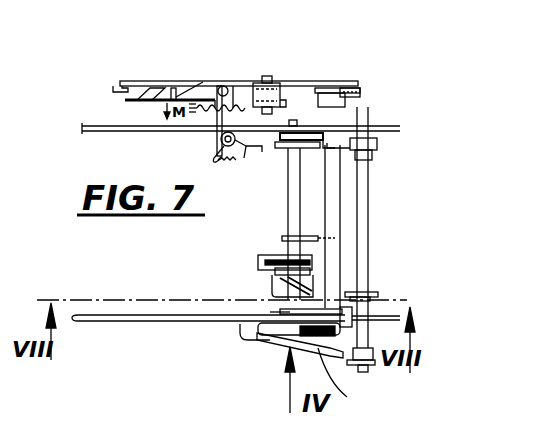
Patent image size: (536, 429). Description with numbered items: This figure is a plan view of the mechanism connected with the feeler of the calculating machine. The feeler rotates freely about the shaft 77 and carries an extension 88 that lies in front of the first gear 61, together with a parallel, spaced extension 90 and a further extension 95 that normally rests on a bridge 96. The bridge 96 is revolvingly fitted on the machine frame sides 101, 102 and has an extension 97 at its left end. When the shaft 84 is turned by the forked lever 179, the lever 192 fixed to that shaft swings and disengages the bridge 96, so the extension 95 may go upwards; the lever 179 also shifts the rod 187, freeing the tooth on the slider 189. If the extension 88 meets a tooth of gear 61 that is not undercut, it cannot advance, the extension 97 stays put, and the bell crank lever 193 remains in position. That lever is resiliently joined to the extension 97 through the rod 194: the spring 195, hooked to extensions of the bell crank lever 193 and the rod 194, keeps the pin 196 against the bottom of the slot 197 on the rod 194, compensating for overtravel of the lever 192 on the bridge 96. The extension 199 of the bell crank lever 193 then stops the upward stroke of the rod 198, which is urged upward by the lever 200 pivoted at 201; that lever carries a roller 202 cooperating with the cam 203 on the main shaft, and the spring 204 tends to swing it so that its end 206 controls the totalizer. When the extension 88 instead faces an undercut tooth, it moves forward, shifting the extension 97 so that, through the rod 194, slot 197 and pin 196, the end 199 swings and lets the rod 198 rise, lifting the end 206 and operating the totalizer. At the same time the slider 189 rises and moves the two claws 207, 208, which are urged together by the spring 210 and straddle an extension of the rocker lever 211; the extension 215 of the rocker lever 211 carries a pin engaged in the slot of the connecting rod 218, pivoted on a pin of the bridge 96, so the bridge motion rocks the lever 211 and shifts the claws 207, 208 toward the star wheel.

The first gear 61 is at (252, 256).
The shaft 77 is at (289, 213).
The shaft 84 is at (369, 184).
The extension 88 is at (290, 266).
The extension 90 is at (302, 288).
The extension 95 is at (336, 237).
The bridge 96 is at (327, 212).
The extension 97 is at (323, 134).
The machine frame side 101 is at (112, 322).
The machine frame side 102 is at (90, 131).
The lever 179 is at (350, 367).
The rod 187 is at (278, 343).
The slider 189 is at (238, 330).
The lever 192 is at (378, 143).
The bell crank lever 193 is at (244, 86).
The rod 194 is at (266, 152).
The spring 195 is at (212, 160).
The pin 196 is at (221, 139).
The slot 197 is at (246, 131).
The rod 198 is at (125, 100).
The extension 199 is at (168, 100).
The lever 200 is at (304, 81).
The pivot 201 is at (270, 76).
The roller 202 is at (346, 100).
The cam 203 is at (362, 91).
The spring 204 is at (248, 106).
The end 206 is at (116, 86).
The claw 207 is at (262, 337).
The claw 208 is at (352, 384).
The spring 210 is at (352, 321).
The rocker lever 211 is at (280, 312).
The extension 215 is at (354, 330).
The connecting rod 218 is at (358, 301).